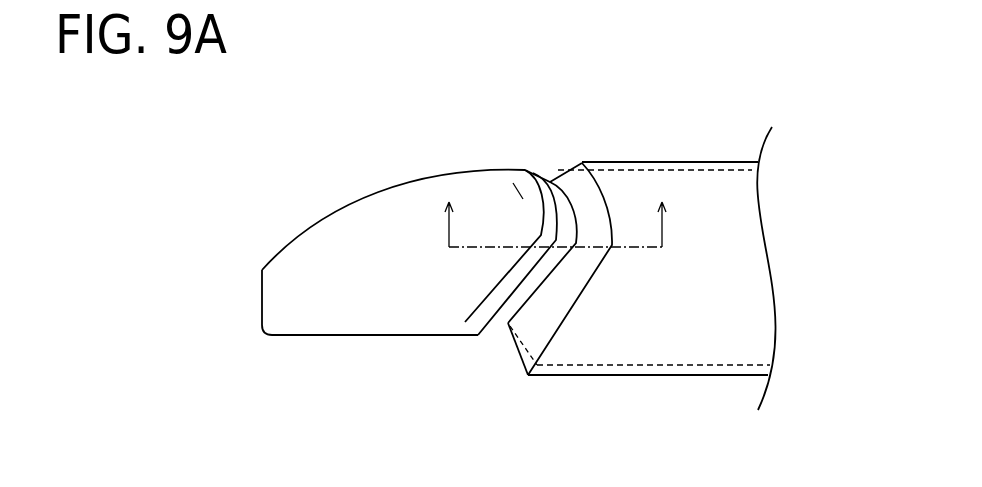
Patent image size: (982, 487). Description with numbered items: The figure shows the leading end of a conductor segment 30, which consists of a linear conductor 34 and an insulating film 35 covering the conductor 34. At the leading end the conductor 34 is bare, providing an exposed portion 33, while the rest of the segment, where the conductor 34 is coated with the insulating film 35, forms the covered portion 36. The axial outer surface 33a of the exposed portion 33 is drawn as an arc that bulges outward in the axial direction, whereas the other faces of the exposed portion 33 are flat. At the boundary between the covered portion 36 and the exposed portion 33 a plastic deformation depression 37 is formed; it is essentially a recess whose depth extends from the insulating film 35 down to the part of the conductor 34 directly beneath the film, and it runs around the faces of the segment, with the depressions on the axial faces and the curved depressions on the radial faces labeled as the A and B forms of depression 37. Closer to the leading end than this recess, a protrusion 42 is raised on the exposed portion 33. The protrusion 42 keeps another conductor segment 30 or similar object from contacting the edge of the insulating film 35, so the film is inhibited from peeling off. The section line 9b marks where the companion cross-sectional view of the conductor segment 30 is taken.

The conductor segment 30 is at (795, 145).
The exposed portion 33 is at (393, 230).
The axial outer surface 33a is at (413, 178).
The conductor 34 is at (660, 190).
The insulating film 35 is at (722, 162).
The covered portion 36 is at (707, 375).
The plastic deformation depression 37 is at (563, 393).
The protrusion 42 is at (522, 195).
The 9b-9b section line 9b is at (557, 244).